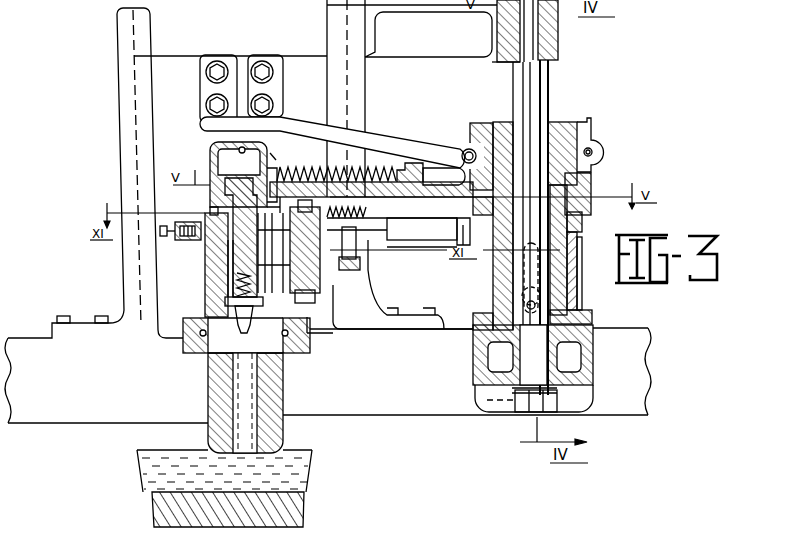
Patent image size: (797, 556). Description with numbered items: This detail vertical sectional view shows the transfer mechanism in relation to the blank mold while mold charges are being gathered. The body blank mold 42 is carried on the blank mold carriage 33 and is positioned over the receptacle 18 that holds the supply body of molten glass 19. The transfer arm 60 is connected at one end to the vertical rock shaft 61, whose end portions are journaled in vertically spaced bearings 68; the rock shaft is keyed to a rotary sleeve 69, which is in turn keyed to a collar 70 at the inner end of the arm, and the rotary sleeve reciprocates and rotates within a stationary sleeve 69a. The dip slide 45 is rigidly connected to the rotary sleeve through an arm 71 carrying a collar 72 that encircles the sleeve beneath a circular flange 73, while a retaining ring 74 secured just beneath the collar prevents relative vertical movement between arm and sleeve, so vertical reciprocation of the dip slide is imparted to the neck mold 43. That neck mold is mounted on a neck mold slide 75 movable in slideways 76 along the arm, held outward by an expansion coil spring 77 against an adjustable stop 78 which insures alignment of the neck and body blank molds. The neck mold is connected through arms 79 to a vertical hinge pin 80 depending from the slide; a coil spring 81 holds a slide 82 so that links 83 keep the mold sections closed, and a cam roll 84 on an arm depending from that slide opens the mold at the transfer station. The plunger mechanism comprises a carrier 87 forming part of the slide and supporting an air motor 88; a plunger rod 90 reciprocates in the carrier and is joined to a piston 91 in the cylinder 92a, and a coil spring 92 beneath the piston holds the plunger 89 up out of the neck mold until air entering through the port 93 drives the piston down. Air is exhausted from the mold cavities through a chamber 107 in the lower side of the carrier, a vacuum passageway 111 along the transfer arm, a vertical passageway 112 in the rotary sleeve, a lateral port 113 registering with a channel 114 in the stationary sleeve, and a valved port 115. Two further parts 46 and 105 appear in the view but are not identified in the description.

The receptacle 18 is at (304, 512).
The supply body of molten glass 19 is at (313, 459).
The blank mold carriage 33 is at (106, 415).
The body blank mold 42 is at (285, 388).
The neck mold 43 is at (218, 302).
The dip slide 45 is at (223, 90).
The column post 46 is at (118, 44).
The transfer arm 60 is at (458, 156).
The rock shaft 61 is at (549, 92).
The bearings 68 is at (587, 424).
The rotary sleeve 69 is at (568, 254).
The stationary sleeve 69a is at (575, 292).
The collar 70 is at (594, 186).
The arm 71 is at (394, 140).
The collar 72 is at (598, 135).
The circular flange 73 is at (580, 124).
The retaining ring 74 is at (583, 227).
The neck mold slide 75 is at (384, 212).
The slideways 76 is at (410, 233).
The expansion coil spring 77 is at (350, 167).
The adjustable stop 78 is at (180, 241).
The arms 79 is at (286, 292).
The vertical hinge pin 80 is at (307, 296).
The coil spring 81 is at (353, 208).
The slide 82 is at (367, 247).
The links 83 is at (333, 262).
The cam roll 84 is at (368, 275).
The carrier 87 is at (213, 257).
The air motor 88 is at (214, 195).
The plunger 89 is at (223, 312).
The plunger rod 90 is at (233, 268).
The piston 91 is at (243, 174).
The coil spring 92 is at (212, 209).
The cylinder 92a is at (270, 153).
The port 93 is at (219, 155).
The nut housing 105 is at (575, 357).
The chamber 107 is at (220, 285).
The vacuum passageway 111 is at (371, 200).
The vertical passageway 112 is at (490, 262).
The lateral port 113 is at (522, 308).
The channel 114 is at (528, 259).
The valved port 115 is at (494, 285).